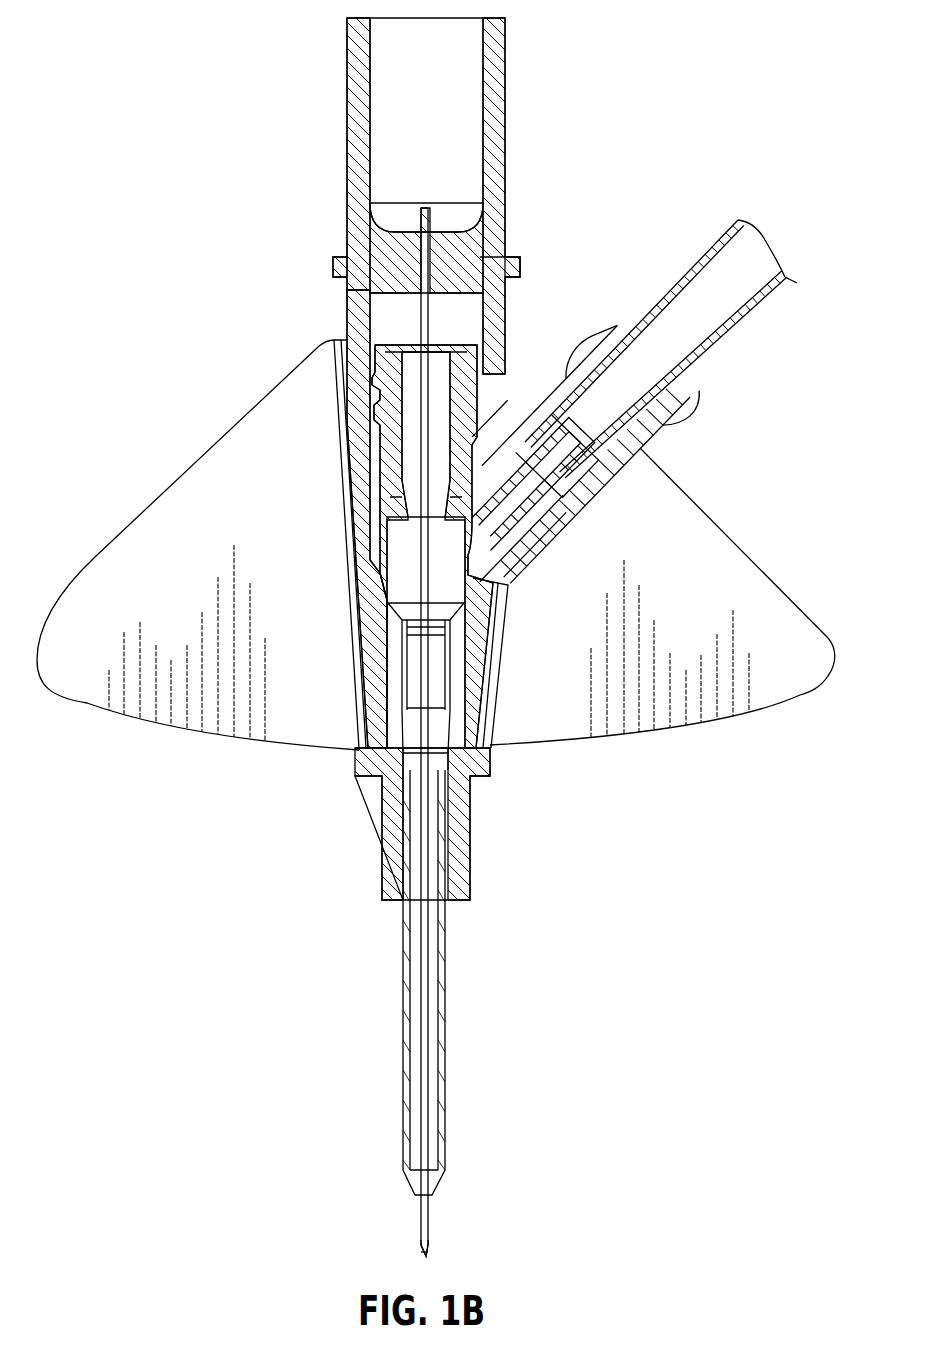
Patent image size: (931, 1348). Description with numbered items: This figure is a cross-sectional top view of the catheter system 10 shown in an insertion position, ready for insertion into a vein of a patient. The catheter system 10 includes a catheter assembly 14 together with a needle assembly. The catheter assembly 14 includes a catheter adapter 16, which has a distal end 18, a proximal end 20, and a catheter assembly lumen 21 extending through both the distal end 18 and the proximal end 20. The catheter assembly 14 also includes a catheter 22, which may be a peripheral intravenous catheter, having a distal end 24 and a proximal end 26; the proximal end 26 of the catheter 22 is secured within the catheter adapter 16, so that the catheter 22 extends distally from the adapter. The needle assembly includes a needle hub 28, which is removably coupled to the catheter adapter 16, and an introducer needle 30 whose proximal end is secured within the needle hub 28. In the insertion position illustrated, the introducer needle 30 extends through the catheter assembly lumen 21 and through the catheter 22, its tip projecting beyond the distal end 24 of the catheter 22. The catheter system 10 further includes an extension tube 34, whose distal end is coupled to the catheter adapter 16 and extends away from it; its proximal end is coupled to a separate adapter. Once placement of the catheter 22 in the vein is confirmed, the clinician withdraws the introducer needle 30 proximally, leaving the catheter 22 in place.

The catheter system 10 is at (118, 178).
The catheter assembly 14 is at (572, 130).
The catheter adapter 16 is at (360, 440).
The distal end 18 is at (382, 890).
The proximal end 20 is at (520, 268).
The catheter assembly lumen 21 is at (414, 557).
The catheter 22 is at (338, 1022).
The distal end 24 is at (356, 1162).
The proximal end 26 is at (450, 770).
The needle hub 28 is at (360, 128).
The introducer needle 30 is at (428, 1105).
The extension tube 34 is at (724, 338).